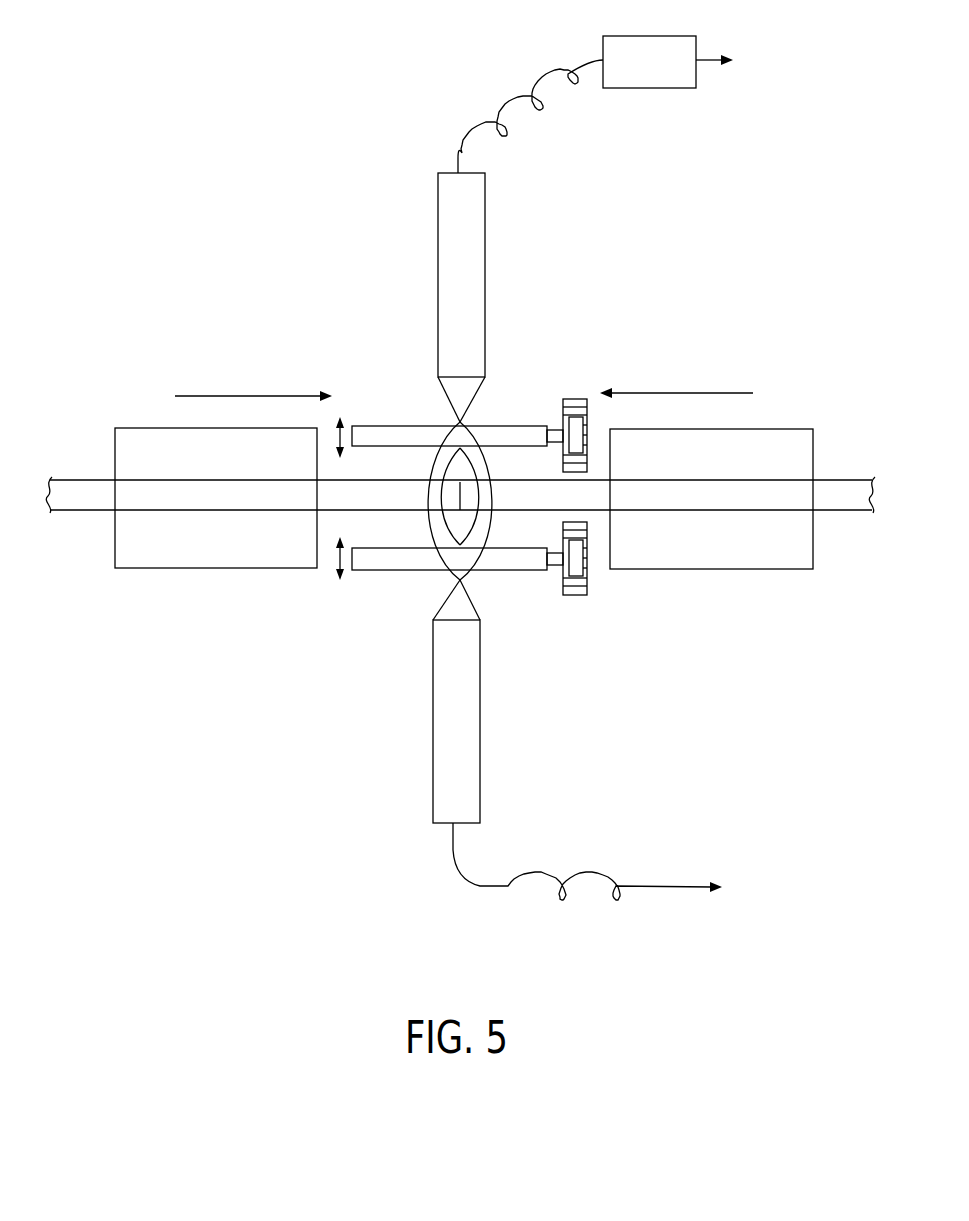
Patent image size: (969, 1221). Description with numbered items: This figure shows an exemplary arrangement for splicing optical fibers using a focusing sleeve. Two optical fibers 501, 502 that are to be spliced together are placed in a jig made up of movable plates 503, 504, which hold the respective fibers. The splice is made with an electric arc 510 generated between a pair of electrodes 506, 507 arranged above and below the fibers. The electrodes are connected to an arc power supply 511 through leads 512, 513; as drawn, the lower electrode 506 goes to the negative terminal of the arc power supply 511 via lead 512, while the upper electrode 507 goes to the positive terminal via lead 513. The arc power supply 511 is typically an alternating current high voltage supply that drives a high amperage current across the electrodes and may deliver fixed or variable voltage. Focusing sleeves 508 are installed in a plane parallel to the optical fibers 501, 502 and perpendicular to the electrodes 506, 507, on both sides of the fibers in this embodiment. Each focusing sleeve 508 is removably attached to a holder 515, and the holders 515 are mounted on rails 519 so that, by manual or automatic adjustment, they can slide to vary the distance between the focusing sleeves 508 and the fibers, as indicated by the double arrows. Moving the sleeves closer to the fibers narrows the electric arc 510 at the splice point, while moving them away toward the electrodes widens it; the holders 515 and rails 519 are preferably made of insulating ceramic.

The optical fiber 501 is at (92, 485).
The optical fiber 502 is at (830, 502).
The movable plate 503 is at (187, 557).
The movable plate 504 is at (787, 437).
The electrode 506 is at (463, 715).
The electrode 507 is at (478, 292).
The focusing sleeve 508 is at (413, 428).
The electric arc 510 is at (424, 537).
The arc power supply 511 is at (623, 88).
The lead 512 is at (637, 888).
The lead 513 is at (530, 60).
The holder 515 is at (559, 425).
The rail 519 is at (587, 398).